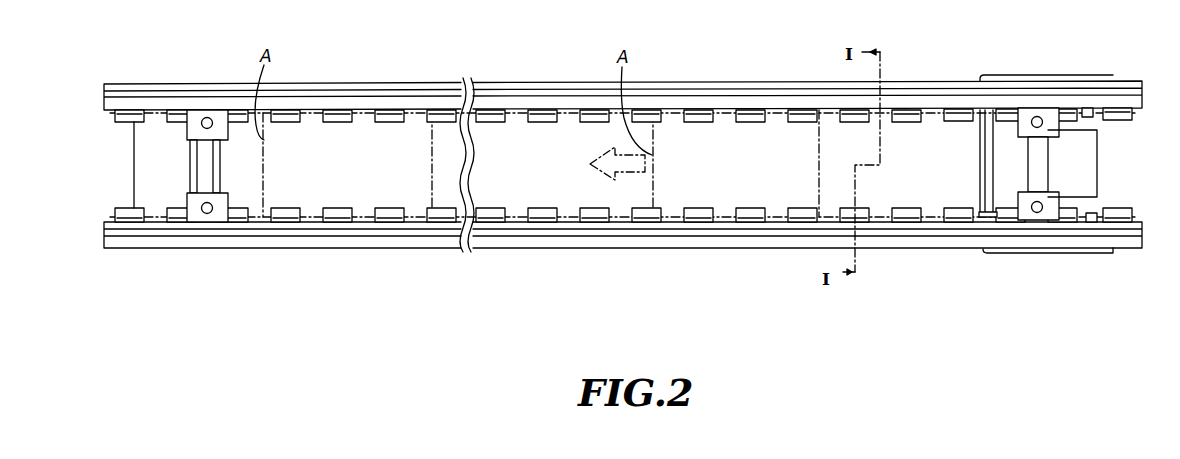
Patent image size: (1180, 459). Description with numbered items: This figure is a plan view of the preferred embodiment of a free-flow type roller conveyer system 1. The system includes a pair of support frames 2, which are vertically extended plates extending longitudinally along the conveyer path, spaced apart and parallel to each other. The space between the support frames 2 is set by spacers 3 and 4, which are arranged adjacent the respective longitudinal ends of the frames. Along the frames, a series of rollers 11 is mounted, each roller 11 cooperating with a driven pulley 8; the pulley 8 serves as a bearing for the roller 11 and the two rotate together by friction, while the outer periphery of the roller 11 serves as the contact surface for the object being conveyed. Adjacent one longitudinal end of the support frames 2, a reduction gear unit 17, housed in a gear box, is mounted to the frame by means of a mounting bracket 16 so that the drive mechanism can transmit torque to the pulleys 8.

The roller conveyer system 1 is at (623, 175).
The support frame 2 is at (537, 82).
The spacer 3 is at (215, 168).
The spacer 4 is at (1042, 178).
The driven pulley 8 is at (116, 209).
The roller 11 is at (124, 123).
The mounting bracket 16 is at (1030, 75).
The reduction gear unit 17 is at (1088, 163).